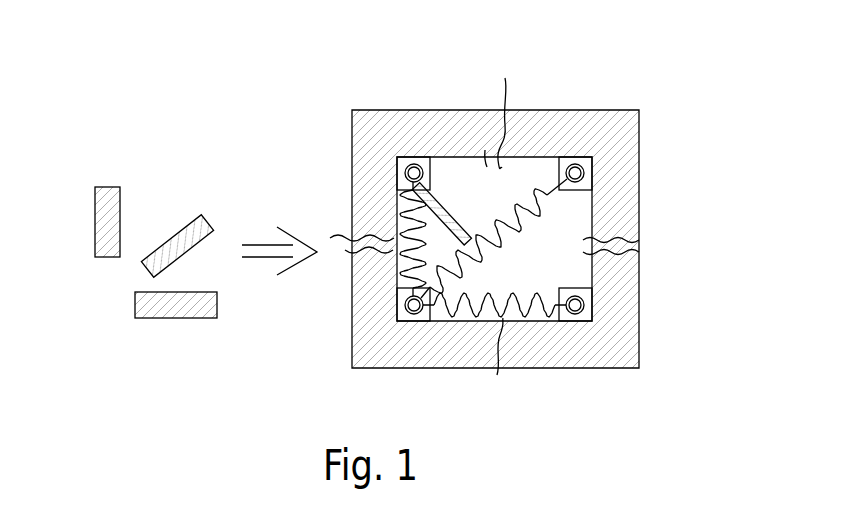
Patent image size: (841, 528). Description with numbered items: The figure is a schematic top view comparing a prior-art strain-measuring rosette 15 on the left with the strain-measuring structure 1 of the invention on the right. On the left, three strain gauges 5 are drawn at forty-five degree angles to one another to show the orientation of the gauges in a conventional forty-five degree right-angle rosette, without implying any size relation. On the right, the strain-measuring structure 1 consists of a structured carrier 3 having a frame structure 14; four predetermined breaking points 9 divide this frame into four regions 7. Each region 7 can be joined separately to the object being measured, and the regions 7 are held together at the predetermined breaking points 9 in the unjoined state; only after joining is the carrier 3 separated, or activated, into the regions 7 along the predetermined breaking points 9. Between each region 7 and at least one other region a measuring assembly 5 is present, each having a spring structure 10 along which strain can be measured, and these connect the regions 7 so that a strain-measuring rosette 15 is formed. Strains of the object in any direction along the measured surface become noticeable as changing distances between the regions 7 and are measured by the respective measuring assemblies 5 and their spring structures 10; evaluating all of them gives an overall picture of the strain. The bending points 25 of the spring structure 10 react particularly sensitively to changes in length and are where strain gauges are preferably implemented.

The strain-measuring structure 1 is at (494, 234).
The carrier 3 is at (499, 234).
The measuring assembly 5 is at (95, 207).
The region 7 is at (368, 343).
The predetermined breaking point 9 is at (340, 246).
The spring structure 10 is at (398, 243).
The frame structure 14 is at (499, 234).
The strain-measuring rosette 15 is at (119, 211).
The bending points of the spring structure 25 is at (398, 221).